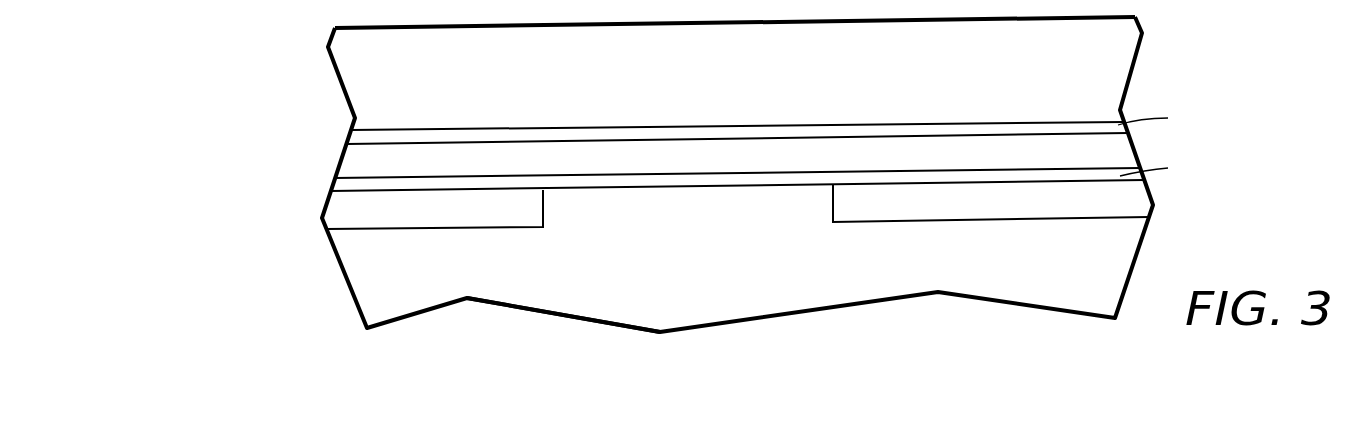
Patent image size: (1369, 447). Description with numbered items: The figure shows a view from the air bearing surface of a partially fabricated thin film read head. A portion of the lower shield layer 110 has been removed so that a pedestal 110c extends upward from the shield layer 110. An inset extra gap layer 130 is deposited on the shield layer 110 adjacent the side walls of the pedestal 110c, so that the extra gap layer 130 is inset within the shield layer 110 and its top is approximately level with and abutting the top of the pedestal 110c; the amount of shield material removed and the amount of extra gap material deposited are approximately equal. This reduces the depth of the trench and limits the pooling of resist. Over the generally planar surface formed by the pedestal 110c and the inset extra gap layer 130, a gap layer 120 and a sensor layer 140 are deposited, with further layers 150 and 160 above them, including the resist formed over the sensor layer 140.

The shield layer 110 is at (357, 262).
The pedestal 110c is at (578, 207).
The gap layer 120 is at (362, 182).
The inset extra gap layer 130 is at (357, 214).
The sensor layer 140 is at (362, 150).
The second gap layer 150 is at (377, 133).
The resist layer 160 is at (375, 79).